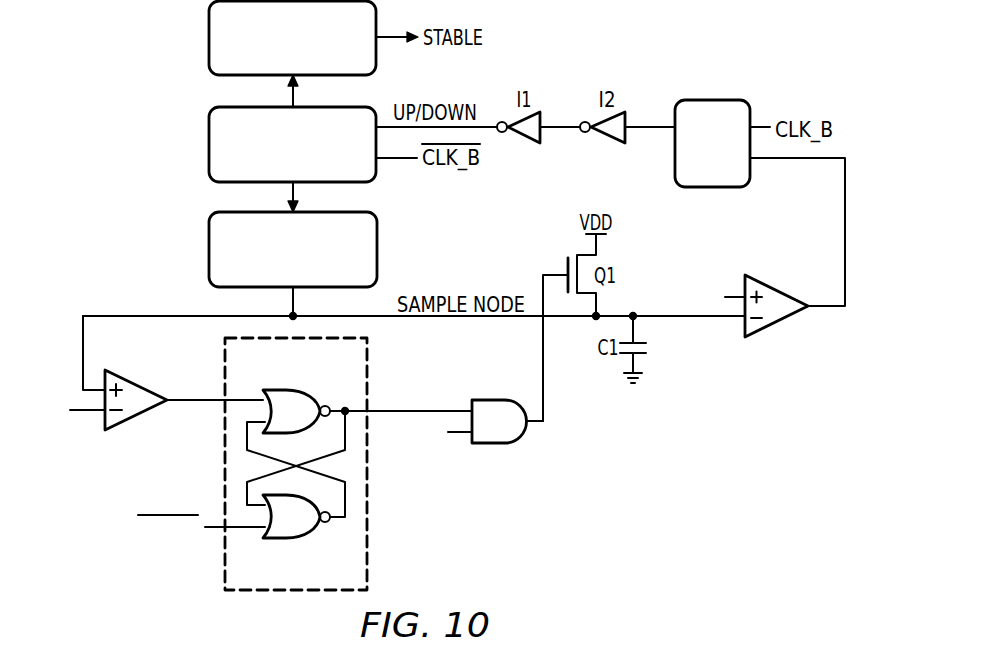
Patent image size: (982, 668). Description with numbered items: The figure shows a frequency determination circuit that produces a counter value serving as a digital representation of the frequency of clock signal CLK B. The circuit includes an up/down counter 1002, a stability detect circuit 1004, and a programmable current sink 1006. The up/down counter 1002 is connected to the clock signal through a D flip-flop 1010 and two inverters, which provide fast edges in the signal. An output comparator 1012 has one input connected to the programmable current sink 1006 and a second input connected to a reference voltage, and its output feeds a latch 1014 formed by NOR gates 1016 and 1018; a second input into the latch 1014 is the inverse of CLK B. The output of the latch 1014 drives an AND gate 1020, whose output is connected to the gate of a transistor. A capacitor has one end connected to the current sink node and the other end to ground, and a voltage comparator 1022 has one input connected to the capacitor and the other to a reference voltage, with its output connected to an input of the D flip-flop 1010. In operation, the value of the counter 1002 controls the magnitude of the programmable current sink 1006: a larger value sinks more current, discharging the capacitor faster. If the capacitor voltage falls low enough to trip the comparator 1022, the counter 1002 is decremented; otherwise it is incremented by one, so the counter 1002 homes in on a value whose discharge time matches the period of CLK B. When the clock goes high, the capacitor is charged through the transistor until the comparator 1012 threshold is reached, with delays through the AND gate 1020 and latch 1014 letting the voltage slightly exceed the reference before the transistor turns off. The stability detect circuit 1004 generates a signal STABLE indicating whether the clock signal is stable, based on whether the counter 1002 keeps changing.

The up/down counter 1002 is at (209, 143).
The stability detect circuit 1004 is at (209, 38).
The programmable current sink 1006 is at (209, 248).
The D flip-flop 1010 is at (712, 100).
The output comparator 1012 is at (137, 378).
The latch 1014 is at (368, 543).
The NOR gate 1016 is at (300, 390).
The NOR gate 1018 is at (300, 538).
The AND gate 1020 is at (495, 444).
The voltage comparator 1022 is at (778, 282).